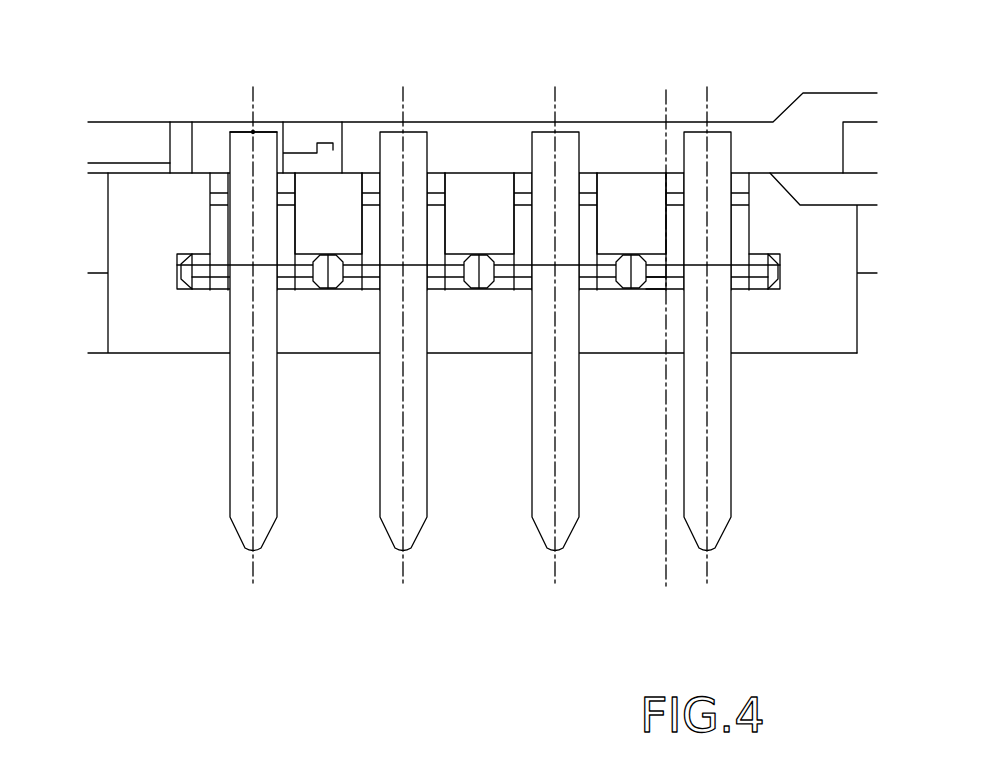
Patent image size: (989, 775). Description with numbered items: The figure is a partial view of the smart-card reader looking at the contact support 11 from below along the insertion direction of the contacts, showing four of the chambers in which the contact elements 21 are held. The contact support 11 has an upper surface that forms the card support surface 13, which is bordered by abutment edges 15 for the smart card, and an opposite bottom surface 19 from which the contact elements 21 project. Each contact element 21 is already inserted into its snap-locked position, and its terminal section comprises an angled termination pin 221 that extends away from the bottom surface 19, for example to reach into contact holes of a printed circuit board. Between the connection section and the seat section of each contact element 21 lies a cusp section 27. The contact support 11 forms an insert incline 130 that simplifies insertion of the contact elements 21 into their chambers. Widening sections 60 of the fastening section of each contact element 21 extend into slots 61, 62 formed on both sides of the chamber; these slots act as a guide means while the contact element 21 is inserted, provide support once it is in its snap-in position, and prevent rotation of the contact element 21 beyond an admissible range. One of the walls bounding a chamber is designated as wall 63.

The contact support 11 is at (840, 247).
The card support surface 13 is at (193, 172).
The abutment edges 15 is at (472, 138).
The bottom surface 19 is at (120, 356).
The contact element 21 is at (437, 286).
The cusp section 27 is at (263, 131).
The widening sections 60 is at (757, 265).
The slot 61 is at (202, 290).
The slot 62 is at (308, 286).
The wall of the chamber 63 is at (215, 232).
The insert incline 130 is at (757, 296).
The angled termination pin 221 is at (237, 443).